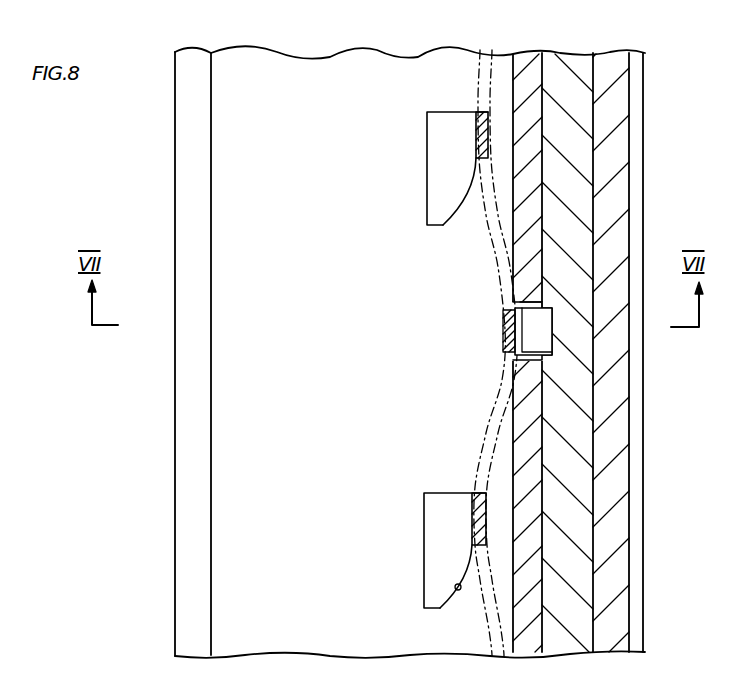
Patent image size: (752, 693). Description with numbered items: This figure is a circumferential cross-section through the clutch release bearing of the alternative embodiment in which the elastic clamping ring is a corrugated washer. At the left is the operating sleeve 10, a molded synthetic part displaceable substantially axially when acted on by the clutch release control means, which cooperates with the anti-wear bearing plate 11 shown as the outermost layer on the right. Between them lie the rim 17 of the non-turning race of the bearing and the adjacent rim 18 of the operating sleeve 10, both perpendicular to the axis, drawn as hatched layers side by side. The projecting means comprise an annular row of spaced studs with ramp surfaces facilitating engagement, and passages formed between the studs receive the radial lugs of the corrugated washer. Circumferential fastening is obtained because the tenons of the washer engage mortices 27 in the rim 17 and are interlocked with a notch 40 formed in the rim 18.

The operating sleeve 10 is at (318, 348).
The anti-wear bearing plate 11 is at (609, 56).
The rim of the non-turning race 17 is at (527, 66).
The rim of the operating sleeve 18 is at (570, 63).
The mortices 27 is at (528, 302).
The notch 40 is at (548, 318).